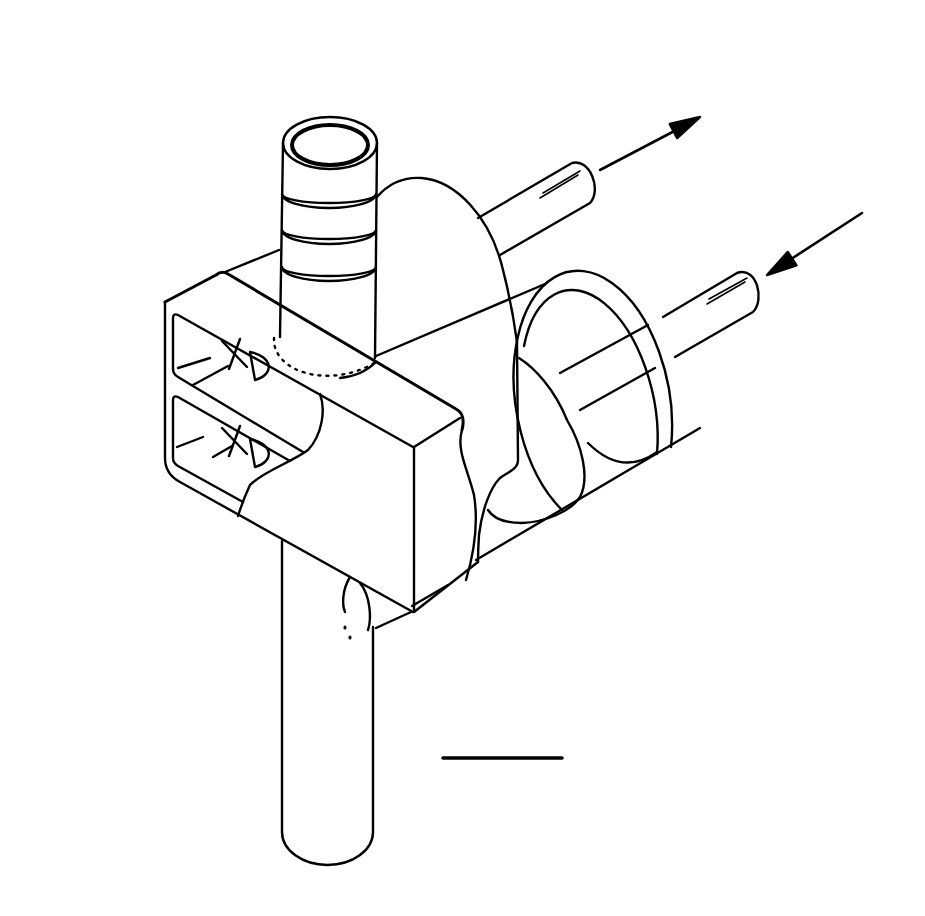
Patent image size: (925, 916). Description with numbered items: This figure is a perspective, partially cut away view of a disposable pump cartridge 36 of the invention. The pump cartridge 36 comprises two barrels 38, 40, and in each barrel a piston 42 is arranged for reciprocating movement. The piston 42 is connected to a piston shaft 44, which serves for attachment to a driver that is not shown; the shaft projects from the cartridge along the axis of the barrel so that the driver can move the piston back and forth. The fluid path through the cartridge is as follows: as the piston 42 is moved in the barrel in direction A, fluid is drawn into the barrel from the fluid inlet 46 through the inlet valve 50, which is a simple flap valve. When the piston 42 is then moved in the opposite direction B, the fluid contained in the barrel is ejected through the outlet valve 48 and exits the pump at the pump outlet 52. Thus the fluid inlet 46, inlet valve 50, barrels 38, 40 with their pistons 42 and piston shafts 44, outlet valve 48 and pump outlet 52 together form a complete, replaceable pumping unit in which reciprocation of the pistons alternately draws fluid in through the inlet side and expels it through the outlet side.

The disposable pump cartridge 36 is at (157, 161).
The barrel 38 is at (404, 222).
The barrel 40 is at (488, 362).
The piston 42 is at (523, 480).
The piston shaft 44 is at (681, 302).
The fluid inlet 46 is at (325, 148).
The outlet valve 48 is at (180, 478).
The inlet valve 50 is at (210, 360).
The pump outlet 52 is at (313, 772).